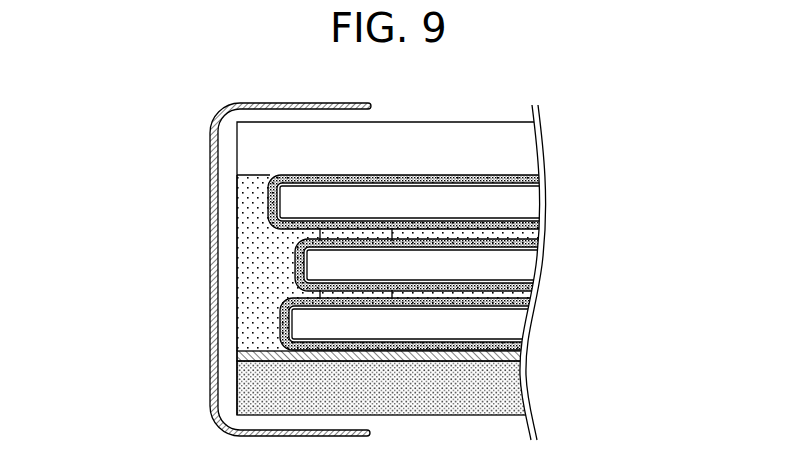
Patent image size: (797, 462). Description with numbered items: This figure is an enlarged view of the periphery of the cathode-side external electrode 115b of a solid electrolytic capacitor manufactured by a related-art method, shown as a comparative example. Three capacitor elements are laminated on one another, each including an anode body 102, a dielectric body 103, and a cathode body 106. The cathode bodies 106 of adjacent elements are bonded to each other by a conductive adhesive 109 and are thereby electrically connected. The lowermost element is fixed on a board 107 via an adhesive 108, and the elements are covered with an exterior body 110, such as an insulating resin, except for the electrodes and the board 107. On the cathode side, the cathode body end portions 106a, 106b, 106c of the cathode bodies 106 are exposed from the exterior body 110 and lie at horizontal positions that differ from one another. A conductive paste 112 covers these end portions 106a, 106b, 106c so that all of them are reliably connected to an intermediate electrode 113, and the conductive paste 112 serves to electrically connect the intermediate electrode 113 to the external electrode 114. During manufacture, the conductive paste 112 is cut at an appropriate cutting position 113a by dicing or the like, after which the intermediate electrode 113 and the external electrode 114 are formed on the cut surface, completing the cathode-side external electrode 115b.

The anode body 102 is at (522, 200).
The dielectric body 103 is at (517, 183).
The cathode body 106 is at (492, 177).
The cathode body end portion 106a is at (268, 196).
The cathode body end portion 106b is at (297, 278).
The cathode body end portion 106c is at (280, 326).
The board 107 is at (497, 388).
The adhesive 108 is at (503, 354).
The conductive adhesive 109 is at (510, 295).
The exterior body 110 is at (465, 142).
The conductive paste 112 is at (255, 223).
The intermediate electrode 113 is at (232, 258).
The cutting position 113a is at (237, 199).
The external electrode 114 is at (216, 289).
The cathode-side external electrode 115b is at (98, 215).